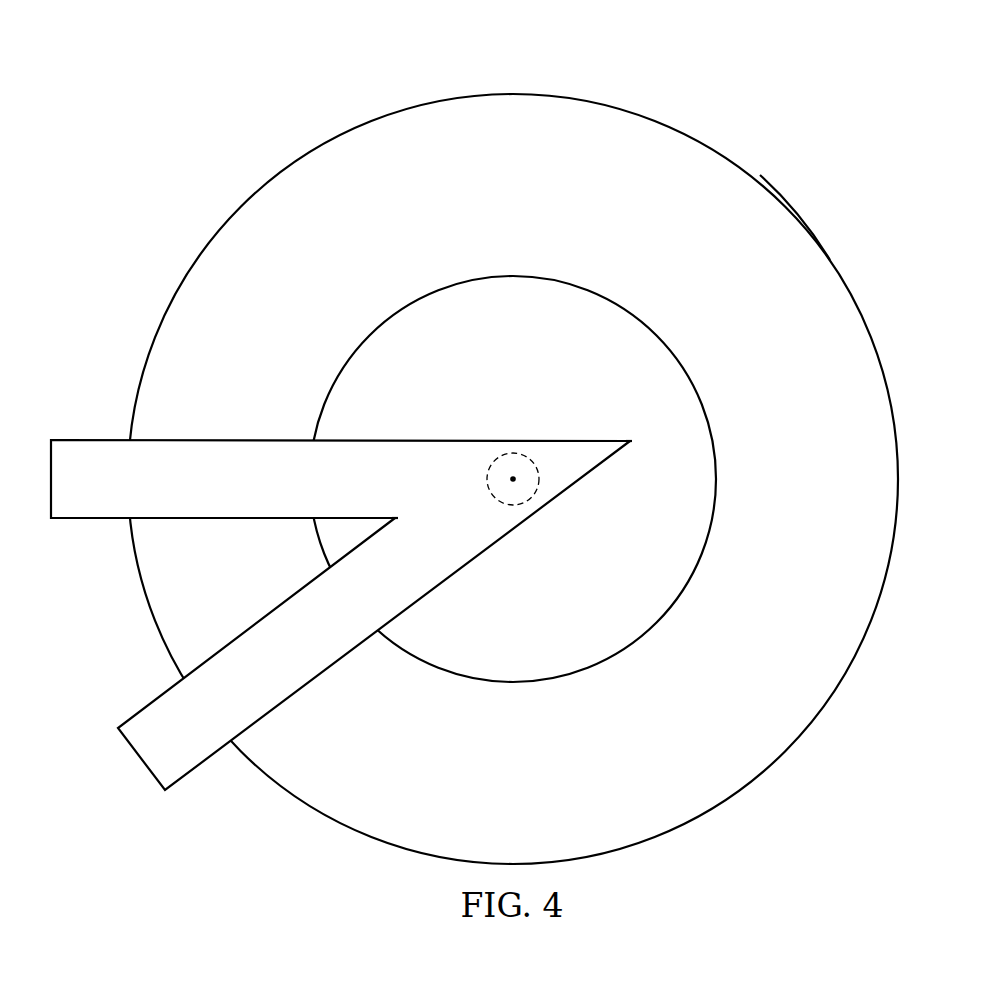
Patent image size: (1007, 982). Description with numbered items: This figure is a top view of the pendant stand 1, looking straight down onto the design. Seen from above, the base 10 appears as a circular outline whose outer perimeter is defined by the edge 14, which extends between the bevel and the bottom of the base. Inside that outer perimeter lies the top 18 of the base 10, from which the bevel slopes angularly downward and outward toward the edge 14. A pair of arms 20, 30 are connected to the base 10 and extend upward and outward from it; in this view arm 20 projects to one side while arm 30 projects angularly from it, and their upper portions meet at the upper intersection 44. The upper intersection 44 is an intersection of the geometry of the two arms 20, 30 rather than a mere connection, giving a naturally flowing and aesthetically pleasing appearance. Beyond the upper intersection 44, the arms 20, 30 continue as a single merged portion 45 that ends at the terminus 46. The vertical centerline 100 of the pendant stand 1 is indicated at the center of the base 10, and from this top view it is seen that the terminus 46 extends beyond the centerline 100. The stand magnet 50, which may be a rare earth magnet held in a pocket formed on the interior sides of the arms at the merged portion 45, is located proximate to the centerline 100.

The pendant stand 1 is at (342, 78).
The base 10 is at (727, 152).
The edge 14 is at (797, 210).
The top 18 is at (674, 523).
The arm 20 is at (98, 437).
The arm 30 is at (151, 696).
The upper intersection 44 is at (387, 518).
The merged portion 45 is at (459, 507).
The terminus 46 is at (630, 441).
The stand magnet 50 is at (530, 464).
The vertical centerline 100 is at (513, 481).